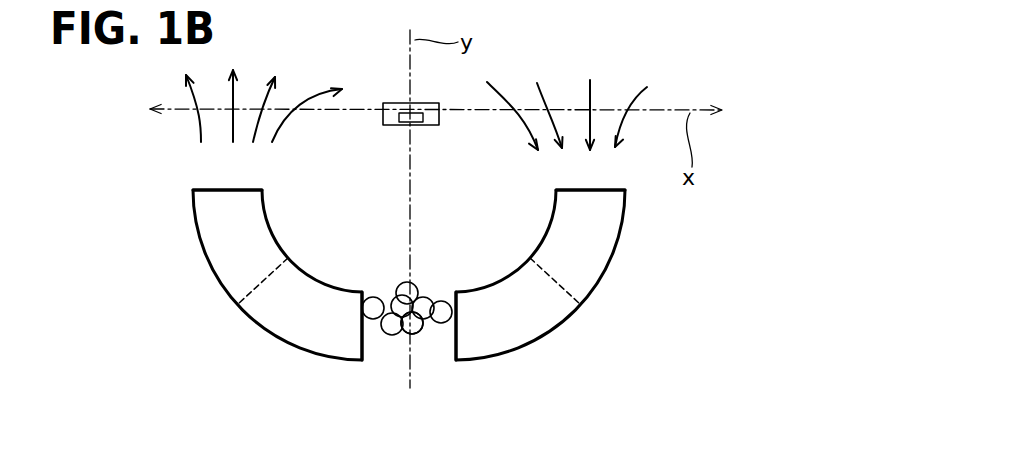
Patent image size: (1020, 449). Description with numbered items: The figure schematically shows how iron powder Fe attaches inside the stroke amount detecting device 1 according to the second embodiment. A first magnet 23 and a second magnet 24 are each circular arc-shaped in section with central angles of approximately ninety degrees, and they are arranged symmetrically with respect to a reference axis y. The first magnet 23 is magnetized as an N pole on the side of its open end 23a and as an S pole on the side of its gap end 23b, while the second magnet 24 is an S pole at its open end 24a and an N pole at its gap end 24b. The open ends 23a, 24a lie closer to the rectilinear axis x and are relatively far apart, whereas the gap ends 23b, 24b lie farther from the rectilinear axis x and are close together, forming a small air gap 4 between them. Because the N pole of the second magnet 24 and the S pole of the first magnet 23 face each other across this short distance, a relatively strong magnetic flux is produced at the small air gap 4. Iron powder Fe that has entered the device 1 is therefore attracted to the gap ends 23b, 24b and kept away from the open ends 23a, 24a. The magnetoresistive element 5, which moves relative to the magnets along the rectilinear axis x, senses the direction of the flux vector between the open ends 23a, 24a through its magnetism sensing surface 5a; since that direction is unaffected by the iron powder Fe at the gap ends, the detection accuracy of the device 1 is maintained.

The stroke amount detecting device 1 is at (707, 82).
The small air gap 4 is at (386, 286).
The magnetoresistive element 5 is at (403, 102).
The magnetism sensing surface 5a is at (403, 123).
The first magnet 23 is at (243, 312).
The open end of first magnet 23a is at (210, 188).
The gap end of first magnet 23b is at (363, 348).
The second magnet 24 is at (587, 303).
The open end of second magnet 24a is at (605, 190).
The gap end of second magnet 24b is at (440, 347).
The iron powder Fe is at (412, 332).